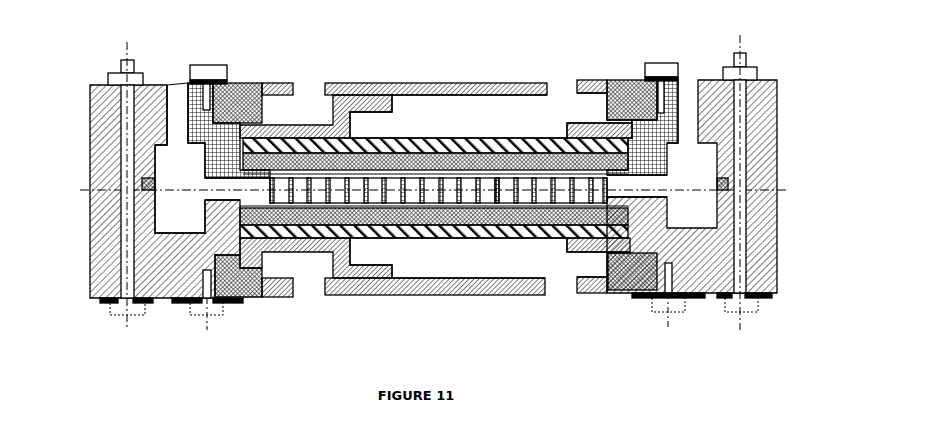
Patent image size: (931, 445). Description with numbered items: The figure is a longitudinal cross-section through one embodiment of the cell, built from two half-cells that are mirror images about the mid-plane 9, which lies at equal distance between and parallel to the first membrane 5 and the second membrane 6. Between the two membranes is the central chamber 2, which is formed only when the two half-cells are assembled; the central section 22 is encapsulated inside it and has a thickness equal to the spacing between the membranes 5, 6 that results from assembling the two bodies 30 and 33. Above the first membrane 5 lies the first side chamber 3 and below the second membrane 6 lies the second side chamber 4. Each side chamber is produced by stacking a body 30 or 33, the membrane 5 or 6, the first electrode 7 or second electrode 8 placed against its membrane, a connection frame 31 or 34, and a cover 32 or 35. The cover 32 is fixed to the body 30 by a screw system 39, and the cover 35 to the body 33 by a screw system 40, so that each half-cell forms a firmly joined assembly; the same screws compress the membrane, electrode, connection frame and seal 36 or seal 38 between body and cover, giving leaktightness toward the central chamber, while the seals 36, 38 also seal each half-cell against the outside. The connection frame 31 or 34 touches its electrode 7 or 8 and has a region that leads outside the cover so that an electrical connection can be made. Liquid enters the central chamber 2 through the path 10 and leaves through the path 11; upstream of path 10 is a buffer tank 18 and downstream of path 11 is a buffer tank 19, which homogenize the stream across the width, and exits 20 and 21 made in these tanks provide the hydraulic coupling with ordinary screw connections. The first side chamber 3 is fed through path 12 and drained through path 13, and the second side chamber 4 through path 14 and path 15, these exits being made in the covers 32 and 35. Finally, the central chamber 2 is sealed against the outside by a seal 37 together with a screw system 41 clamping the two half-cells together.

The central chamber 2 is at (438, 190).
The first side chamber 3 is at (491, 115).
The second side chamber 4 is at (490, 258).
The first membrane 5 is at (368, 162).
The second membrane 6 is at (480, 216).
The first electrode 7 is at (345, 147).
The second electrode 8 is at (455, 232).
The mid-plane 9 is at (442, 190).
The path 10 is at (237, 189).
The path 11 is at (637, 186).
The path 12 is at (287, 90).
The path 13 is at (580, 88).
The path 14 is at (289, 287).
The path 15 is at (580, 286).
The buffer tank 18 is at (180, 158).
The buffer tank 19 is at (692, 186).
The exit 20 is at (177, 114).
The exit 21 is at (651, 127).
The central section 22 is at (503, 190).
The body 30 is at (232, 135).
The connection frame 31 is at (313, 133).
The cover 32 is at (452, 88).
The body 33 is at (224, 300).
The connection frame 34 is at (306, 246).
The cover 35 is at (527, 288).
The seal 36 is at (250, 115).
The seal 37 is at (150, 180).
The seal 38 is at (250, 270).
The screw system 39 is at (203, 72).
The screw system 40 is at (201, 312).
The screw system 41 is at (133, 312).